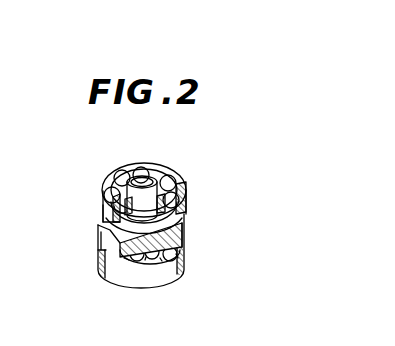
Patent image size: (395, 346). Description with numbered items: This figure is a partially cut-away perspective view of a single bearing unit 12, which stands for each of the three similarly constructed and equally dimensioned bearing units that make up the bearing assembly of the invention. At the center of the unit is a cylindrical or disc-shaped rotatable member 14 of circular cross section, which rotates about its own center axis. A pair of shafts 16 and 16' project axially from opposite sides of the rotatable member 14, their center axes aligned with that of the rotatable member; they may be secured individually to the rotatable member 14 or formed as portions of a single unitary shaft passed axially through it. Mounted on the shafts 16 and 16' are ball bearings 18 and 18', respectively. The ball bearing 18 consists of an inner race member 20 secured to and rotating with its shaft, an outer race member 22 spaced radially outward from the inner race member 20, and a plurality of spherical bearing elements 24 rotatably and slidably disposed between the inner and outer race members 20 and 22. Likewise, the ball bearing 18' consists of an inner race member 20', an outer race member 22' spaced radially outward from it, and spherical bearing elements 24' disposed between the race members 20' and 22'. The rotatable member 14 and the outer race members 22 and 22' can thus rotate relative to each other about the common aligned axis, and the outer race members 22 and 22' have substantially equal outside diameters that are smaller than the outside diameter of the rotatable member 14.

The bearing unit 12 is at (95, 233).
The rotatable member 14 is at (184, 233).
The shaft 16 is at (127, 186).
The shaft 16' is at (196, 279).
The ball bearing 18 is at (73, 195).
The ball bearing 18' is at (73, 264).
The inner race member 20 is at (145, 171).
The inner race member 20' is at (129, 287).
The outer race member 22 is at (182, 198).
The outer race member 22' is at (180, 259).
The spherical bearing elements 24 is at (174, 184).
The spherical bearing elements 24' is at (151, 291).